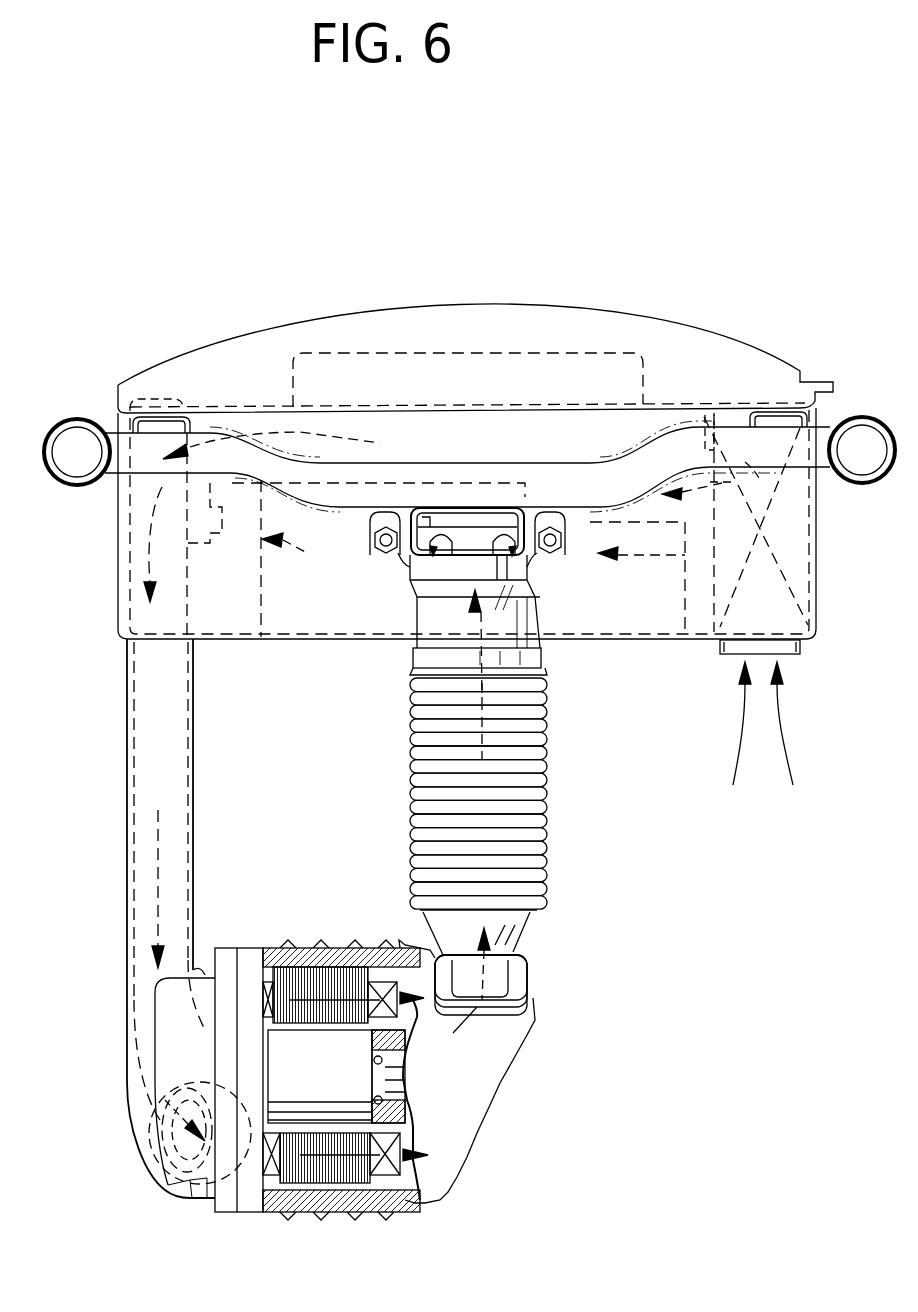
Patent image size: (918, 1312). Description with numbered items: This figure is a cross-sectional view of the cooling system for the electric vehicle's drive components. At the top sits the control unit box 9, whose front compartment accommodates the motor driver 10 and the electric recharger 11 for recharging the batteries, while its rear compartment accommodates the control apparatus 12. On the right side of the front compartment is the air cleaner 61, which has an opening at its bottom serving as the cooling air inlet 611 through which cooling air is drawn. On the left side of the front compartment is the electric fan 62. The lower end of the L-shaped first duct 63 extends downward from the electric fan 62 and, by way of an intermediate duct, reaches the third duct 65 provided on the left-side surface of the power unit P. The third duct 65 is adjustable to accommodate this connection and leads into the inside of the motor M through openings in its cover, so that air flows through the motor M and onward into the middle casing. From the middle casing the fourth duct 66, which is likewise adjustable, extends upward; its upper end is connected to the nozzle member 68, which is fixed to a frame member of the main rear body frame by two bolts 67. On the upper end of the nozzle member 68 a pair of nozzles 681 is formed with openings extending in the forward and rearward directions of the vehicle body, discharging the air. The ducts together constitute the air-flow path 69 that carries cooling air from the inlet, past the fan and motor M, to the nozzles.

The control unit box 9 is at (607, 286).
The control apparatus 12 is at (402, 350).
The electric fan 62 is at (138, 590).
The motor driver 10 is at (257, 600).
The air cleaner 61 is at (76, 418).
The first duct 63 is at (493, 463).
The bolts 67 is at (383, 540).
The nozzles 681 is at (467, 547).
The nozzle member 68 is at (558, 613).
The fourth duct 66 is at (543, 790).
The electric recharger 11 is at (700, 627).
The cooling air inlet 611 is at (795, 656).
The air-flow path 69 is at (219, 782).
The third duct 65 is at (162, 1025).
The motor M is at (297, 930).
The power unit P is at (357, 900).